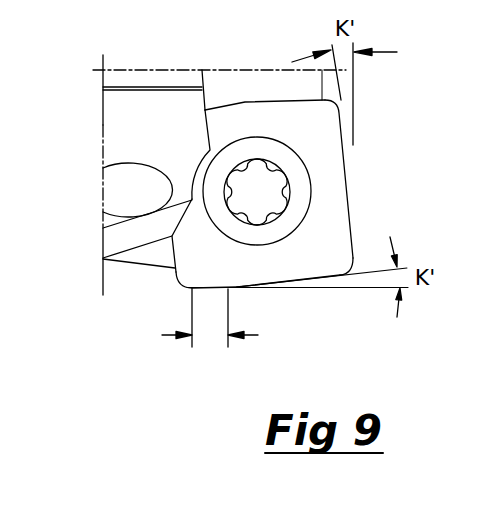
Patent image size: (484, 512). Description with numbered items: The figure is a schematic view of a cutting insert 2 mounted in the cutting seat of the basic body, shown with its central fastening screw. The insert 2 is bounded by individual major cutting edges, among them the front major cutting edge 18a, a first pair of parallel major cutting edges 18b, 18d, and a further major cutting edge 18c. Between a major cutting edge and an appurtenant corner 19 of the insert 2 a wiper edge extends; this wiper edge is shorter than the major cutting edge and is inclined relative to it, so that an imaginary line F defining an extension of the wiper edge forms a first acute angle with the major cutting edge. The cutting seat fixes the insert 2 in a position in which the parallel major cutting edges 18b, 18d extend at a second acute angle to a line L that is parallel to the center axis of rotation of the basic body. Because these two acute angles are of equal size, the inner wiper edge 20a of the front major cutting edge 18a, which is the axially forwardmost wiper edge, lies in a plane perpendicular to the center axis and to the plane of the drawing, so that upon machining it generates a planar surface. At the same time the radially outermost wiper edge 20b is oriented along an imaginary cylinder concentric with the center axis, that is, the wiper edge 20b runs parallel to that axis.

The cutting insert 2 is at (246, 84).
The front major cutting edge 18a is at (291, 288).
The major cutting edge 18b is at (347, 152).
The major cutting edge 18c is at (268, 100).
The major cutting edge 18d is at (151, 249).
The corner 19 is at (181, 275).
The inner wiper edge 20a is at (213, 288).
The wiper edge 20b is at (353, 240).
The imaginary line F is at (320, 288).
The line L is at (353, 87).